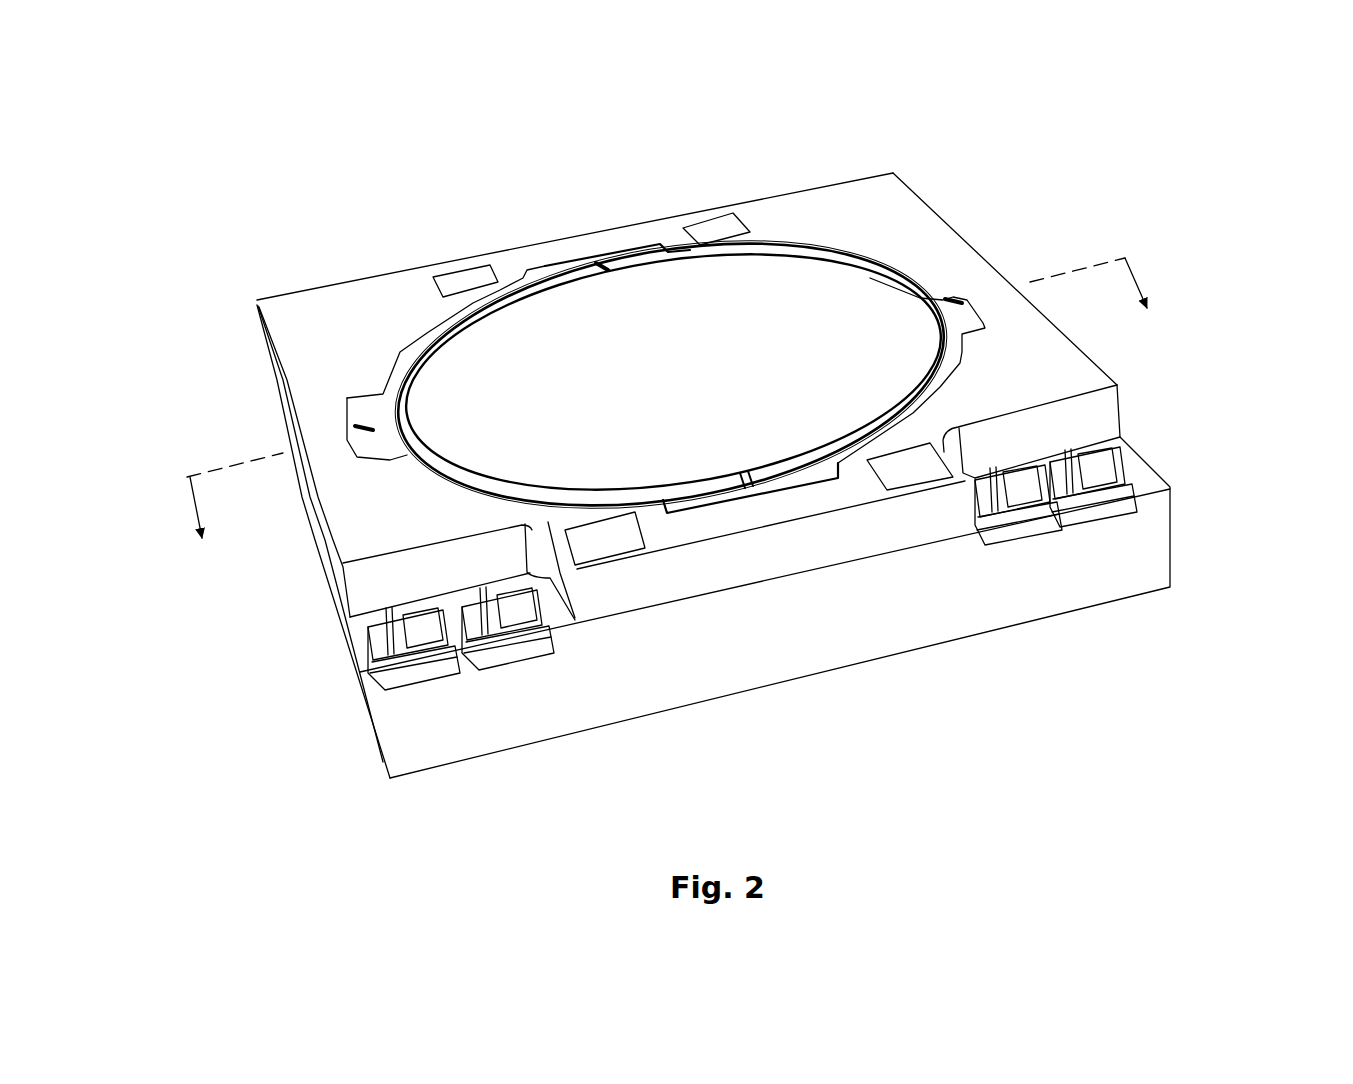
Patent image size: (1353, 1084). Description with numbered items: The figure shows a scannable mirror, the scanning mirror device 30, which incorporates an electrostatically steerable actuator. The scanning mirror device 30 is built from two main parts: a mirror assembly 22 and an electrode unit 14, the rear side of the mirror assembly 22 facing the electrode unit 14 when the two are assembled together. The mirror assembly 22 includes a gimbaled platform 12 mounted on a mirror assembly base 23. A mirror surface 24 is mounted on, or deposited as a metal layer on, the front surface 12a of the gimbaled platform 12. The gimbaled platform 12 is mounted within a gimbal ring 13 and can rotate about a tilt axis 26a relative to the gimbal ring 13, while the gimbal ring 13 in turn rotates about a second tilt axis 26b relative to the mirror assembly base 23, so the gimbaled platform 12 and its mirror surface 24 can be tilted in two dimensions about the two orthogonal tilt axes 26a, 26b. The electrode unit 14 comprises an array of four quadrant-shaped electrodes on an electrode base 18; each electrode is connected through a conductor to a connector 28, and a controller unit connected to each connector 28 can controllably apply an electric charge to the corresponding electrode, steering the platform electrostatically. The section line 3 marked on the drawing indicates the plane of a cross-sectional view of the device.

The scanning mirror device 30 is at (696, 445).
The gimbaled platform 12 is at (450, 330).
The front surface of gimbaled platform 12a is at (810, 287).
The gimbal ring 13 is at (400, 370).
The mirror surface 24 is at (674, 317).
The tilt axis 26a is at (600, 265).
The tilt axis 26b is at (360, 430).
The mirror assembly 22 is at (1135, 366).
The mirror assembly base 23 is at (960, 240).
The electrode base 18 is at (893, 653).
The electrode unit 14 is at (328, 712).
The connector 28 is at (1037, 535).
The section line 3 is at (676, 419).